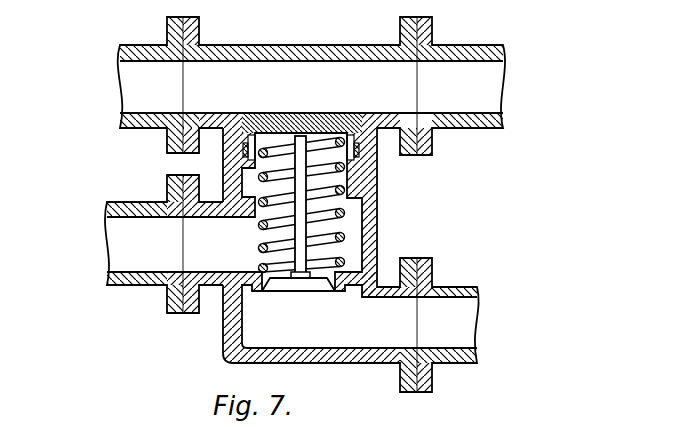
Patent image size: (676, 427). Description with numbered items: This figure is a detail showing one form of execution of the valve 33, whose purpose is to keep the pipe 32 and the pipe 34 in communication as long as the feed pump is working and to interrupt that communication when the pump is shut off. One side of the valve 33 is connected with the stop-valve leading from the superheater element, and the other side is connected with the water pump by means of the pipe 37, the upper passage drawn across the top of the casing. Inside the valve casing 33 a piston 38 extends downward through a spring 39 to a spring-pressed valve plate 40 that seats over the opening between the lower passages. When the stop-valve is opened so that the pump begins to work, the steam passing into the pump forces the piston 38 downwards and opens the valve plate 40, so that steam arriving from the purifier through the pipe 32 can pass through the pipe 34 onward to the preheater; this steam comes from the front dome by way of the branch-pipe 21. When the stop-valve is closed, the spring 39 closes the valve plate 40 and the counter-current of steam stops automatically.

The branch-pipe 21 is at (458, 70).
The pipe 37 is at (130, 70).
The valve 33 is at (278, 46).
The pipe 34 is at (125, 265).
The pipe 32 is at (470, 323).
The piston 38 is at (298, 120).
The spring 39 is at (344, 237).
The valve plate 40 is at (305, 289).